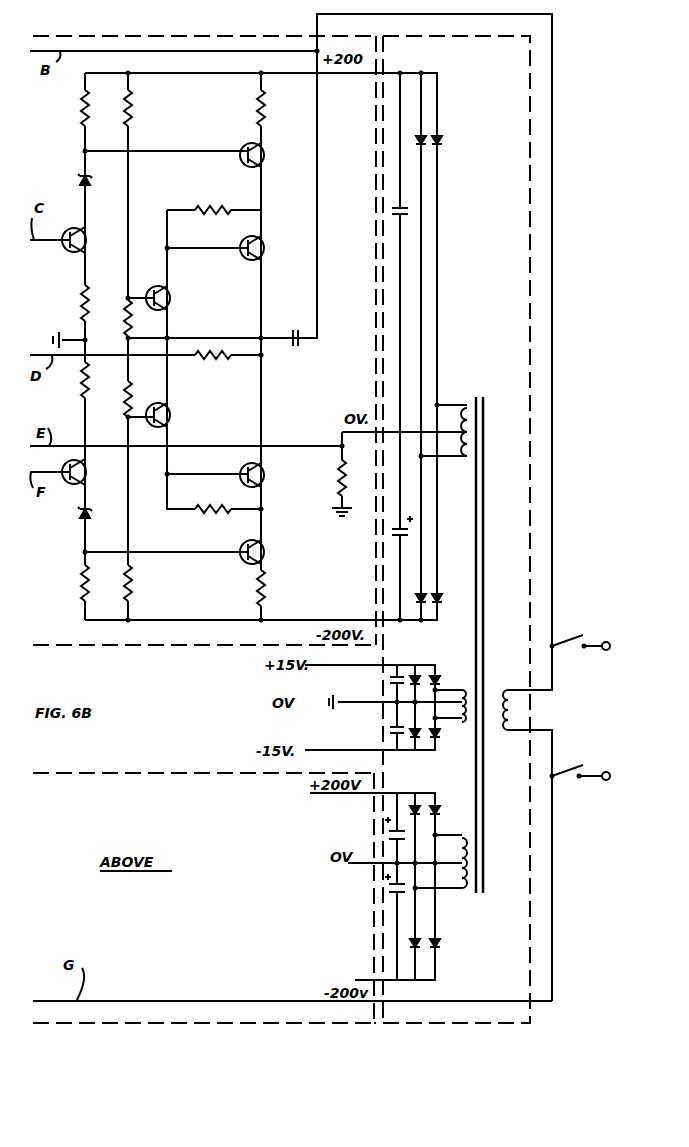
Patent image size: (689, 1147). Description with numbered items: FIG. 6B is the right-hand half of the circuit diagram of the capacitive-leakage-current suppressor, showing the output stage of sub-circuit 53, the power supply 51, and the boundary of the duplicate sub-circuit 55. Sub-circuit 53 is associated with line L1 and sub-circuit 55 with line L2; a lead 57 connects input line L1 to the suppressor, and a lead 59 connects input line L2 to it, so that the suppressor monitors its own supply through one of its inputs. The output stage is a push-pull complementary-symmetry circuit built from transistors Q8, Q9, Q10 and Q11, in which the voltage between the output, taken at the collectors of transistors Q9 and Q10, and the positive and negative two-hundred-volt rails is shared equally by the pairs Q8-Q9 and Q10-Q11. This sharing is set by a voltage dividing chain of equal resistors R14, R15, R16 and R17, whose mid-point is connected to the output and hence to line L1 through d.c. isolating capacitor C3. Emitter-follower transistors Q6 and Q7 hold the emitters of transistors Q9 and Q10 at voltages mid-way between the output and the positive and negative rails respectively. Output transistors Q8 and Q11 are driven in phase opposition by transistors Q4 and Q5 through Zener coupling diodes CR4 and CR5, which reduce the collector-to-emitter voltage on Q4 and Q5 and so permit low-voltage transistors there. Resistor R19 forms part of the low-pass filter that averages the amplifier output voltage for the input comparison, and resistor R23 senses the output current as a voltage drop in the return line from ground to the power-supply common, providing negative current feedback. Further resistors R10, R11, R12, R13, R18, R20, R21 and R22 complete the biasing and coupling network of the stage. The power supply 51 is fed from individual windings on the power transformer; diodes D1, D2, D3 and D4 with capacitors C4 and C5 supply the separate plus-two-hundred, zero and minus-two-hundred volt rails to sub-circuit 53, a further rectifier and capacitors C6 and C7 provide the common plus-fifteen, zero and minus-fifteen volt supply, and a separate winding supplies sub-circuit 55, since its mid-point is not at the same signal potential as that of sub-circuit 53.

The power supply 51 is at (530, 75).
The sub-circuit 53 is at (184, 649).
The sub-circuit 55 is at (103, 773).
The lead 57 is at (100, 52).
The lead 59 is at (155, 1001).
The line L1 is at (590, 634).
The line L2 is at (591, 764).
The resistor R10 is at (66, 108).
The resistor R11 is at (80, 300).
The resistor R12 is at (80, 385).
The resistor R13 is at (80, 580).
The resistor R14 is at (132, 108).
The resistor R15 is at (124, 318).
The resistor R16 is at (124, 395).
The resistor R17 is at (124, 584).
The resistor R18 is at (196, 208).
The resistor R19 is at (212, 362).
The resistor R20 is at (232, 512).
The resistor R21 is at (265, 104).
The resistor R22 is at (261, 588).
The resistor R23 is at (338, 488).
The transistor Q4 is at (86, 234).
The transistor Q5 is at (86, 479).
The emitter-follower transistor Q6 is at (159, 288).
The emitter-follower transistor Q7 is at (164, 406).
The output transistor Q8 is at (264, 152).
The transistor Q9 is at (263, 242).
The transistor Q10 is at (264, 474).
The output transistor Q11 is at (264, 549).
The Zener coupling diode CR4 is at (80, 186).
The Zener coupling diode CR5 is at (88, 516).
The diode D1 is at (442, 140).
The diode D2 is at (438, 147).
The diode D3 is at (422, 593).
The diode D4 is at (437, 596).
The d.c. isolating capacitor C3 is at (291, 336).
The capacitor C4 is at (392, 211).
The capacitor C5 is at (392, 538).
The capacitor C6 is at (390, 680).
The capacitor C7 is at (390, 730).